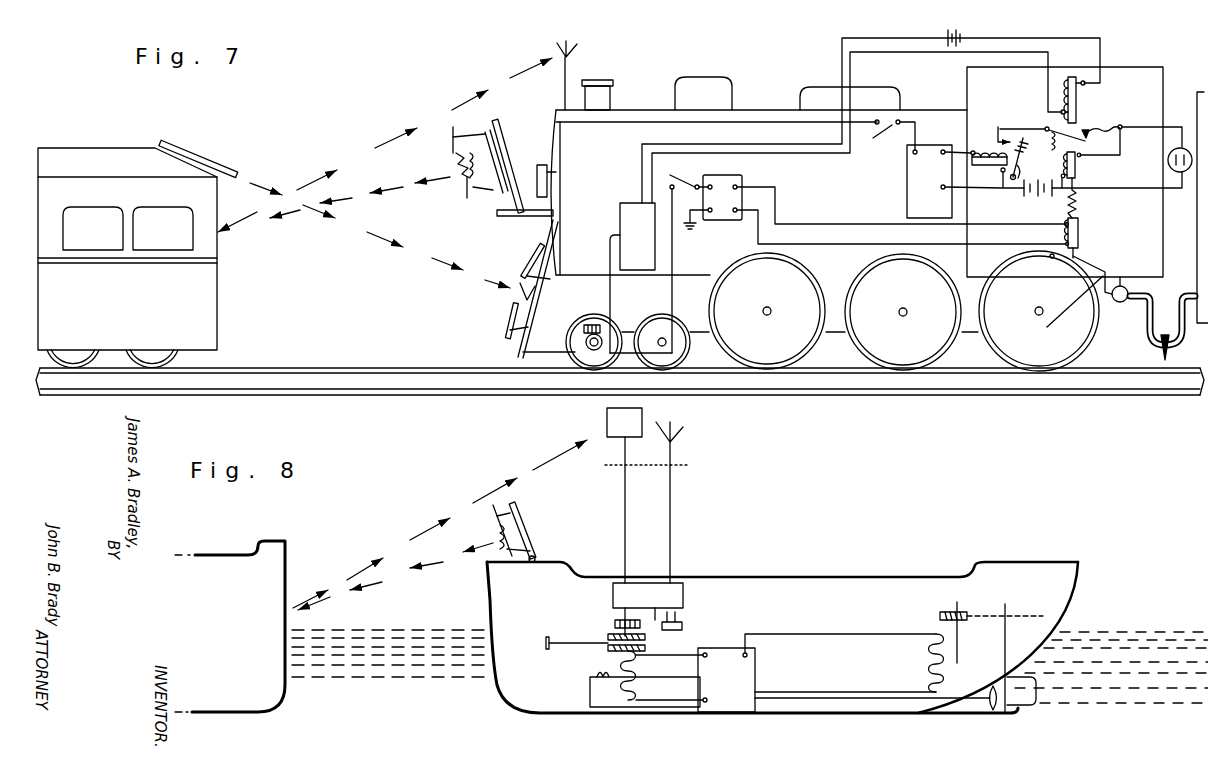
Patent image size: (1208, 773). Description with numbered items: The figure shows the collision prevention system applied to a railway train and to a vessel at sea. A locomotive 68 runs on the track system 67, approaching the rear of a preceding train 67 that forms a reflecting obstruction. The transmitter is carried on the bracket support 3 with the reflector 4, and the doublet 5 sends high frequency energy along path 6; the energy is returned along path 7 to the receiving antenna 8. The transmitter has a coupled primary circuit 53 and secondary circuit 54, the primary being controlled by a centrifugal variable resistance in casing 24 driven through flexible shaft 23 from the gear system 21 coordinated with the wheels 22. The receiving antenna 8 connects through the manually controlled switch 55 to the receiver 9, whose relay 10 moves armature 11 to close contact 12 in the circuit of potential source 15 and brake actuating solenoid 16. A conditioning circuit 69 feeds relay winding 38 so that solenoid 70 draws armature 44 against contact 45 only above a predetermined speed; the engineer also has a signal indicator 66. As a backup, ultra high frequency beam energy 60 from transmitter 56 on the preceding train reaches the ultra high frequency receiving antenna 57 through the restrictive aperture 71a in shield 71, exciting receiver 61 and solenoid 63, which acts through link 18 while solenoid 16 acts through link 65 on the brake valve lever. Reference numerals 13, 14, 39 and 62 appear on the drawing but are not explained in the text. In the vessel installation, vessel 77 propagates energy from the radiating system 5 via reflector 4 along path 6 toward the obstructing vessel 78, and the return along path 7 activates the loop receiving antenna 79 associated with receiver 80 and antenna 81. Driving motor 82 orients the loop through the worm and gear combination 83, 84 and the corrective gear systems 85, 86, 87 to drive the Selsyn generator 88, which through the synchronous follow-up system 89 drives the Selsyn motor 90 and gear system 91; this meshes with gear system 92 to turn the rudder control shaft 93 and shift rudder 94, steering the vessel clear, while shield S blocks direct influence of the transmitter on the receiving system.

In FIG. 7, the bracket support 3 is at (528, 205).
In FIG. 7, the reflector 4 is at (498, 130).
In FIG. 8, the reflector 4 is at (518, 516).
In FIG. 7, the doublet 5 is at (453, 139).
In FIG. 8, the doublet 5 is at (492, 508).
In FIG. 7, the path 6 is at (383, 198).
In FIG. 8, the path 6 is at (411, 585).
In FIG. 7, the path 7 is at (398, 138).
In FIG. 8, the path 7 is at (418, 540).
In FIG. 7, the receiving antenna 8 is at (576, 50).
In FIG. 7, the receiver 9 is at (908, 200).
In FIG. 7, the relay 10 is at (988, 172).
In FIG. 7, the armature 11 is at (1017, 183).
In FIG. 7, the contact 12 is at (998, 127).
In FIG. 7, the link 13 is at (1106, 293).
In FIG. 7, the driving wheel lever 14 is at (906, 311).
In FIG. 7, the potential source 15 is at (1041, 197).
In FIG. 7, the brake actuating solenoid 16 is at (1080, 170).
In FIG. 7, the link 18 is at (1083, 259).
In FIG. 7, the gear system 21 is at (600, 326).
In FIG. 7, the wheels 22 is at (585, 348).
In FIG. 7, the flexible shaft 23 is at (607, 245).
In FIG. 7, the casing 24 is at (633, 213).
In FIG. 7, the relay winding 38 is at (1078, 104).
In FIG. 7, the battery 39 is at (948, 33).
In FIG. 7, the armature 44 is at (1047, 126).
In FIG. 7, the contact 45 is at (1121, 135).
In FIG. 7, the primary circuit 53 is at (497, 165).
In FIG. 7, the secondary circuit 54 is at (452, 165).
In FIG. 7, the manually controlled switch 55 is at (882, 139).
In FIG. 7, the ultra high frequency transmitter 56 is at (197, 160).
In FIG. 7, the ultra high frequency receiving antenna 57 is at (522, 292).
In FIG. 7, the ultra high frequency beam energy 60 is at (436, 260).
In FIG. 7, the receiver 61 is at (737, 183).
In FIG. 7, the switch 62 is at (680, 172).
In FIG. 7, the solenoid 63 is at (1080, 231).
In FIG. 7, the link 65 is at (1078, 207).
In FIG. 7, the signal indicator 66 is at (1168, 161).
In FIG. 7, the track system 67 is at (210, 318).
In FIG. 7, the locomotive 68 is at (605, 140).
In FIG. 7, the conditioning circuit 69 is at (816, 150).
In FIG. 7, the solenoid 70 is at (1076, 78).
In FIG. 7, the shield 71 is at (528, 264).
In FIG. 7, the restrictive aperture 71a is at (516, 280).
In FIG. 8, the vessel 77 is at (772, 587).
In FIG. 8, the vessel 78 is at (207, 575).
In FIG. 8, the loop receiving antenna 79 is at (613, 433).
In FIG. 8, the receiver 80 is at (622, 600).
In FIG. 8, the antenna 81 is at (683, 433).
In FIG. 8, the driving motor 82 is at (682, 620).
In FIG. 8, the worm and gear combination 83 is at (653, 618).
In FIG. 8, the worm and gear combination 84 is at (613, 624).
In FIG. 8, the corrective gear system 85 is at (607, 638).
In FIG. 8, the corrective gear system 86 is at (607, 649).
In FIG. 8, the corrective gear system 87 is at (612, 657).
In FIG. 8, the Selsyn generator 88 is at (618, 692).
In FIG. 8, the synchronous follow-up system 89 is at (728, 704).
In FIG. 8, the Selsyn motor 90 is at (935, 670).
In FIG. 8, the gear system 91 is at (939, 617).
In FIG. 8, the gear system 92 is at (988, 607).
In FIG. 8, the rudder control shaft 93 is at (1010, 640).
In FIG. 8, the rudder 94 is at (1027, 706).
In FIG. 8, the shield S is at (685, 470).